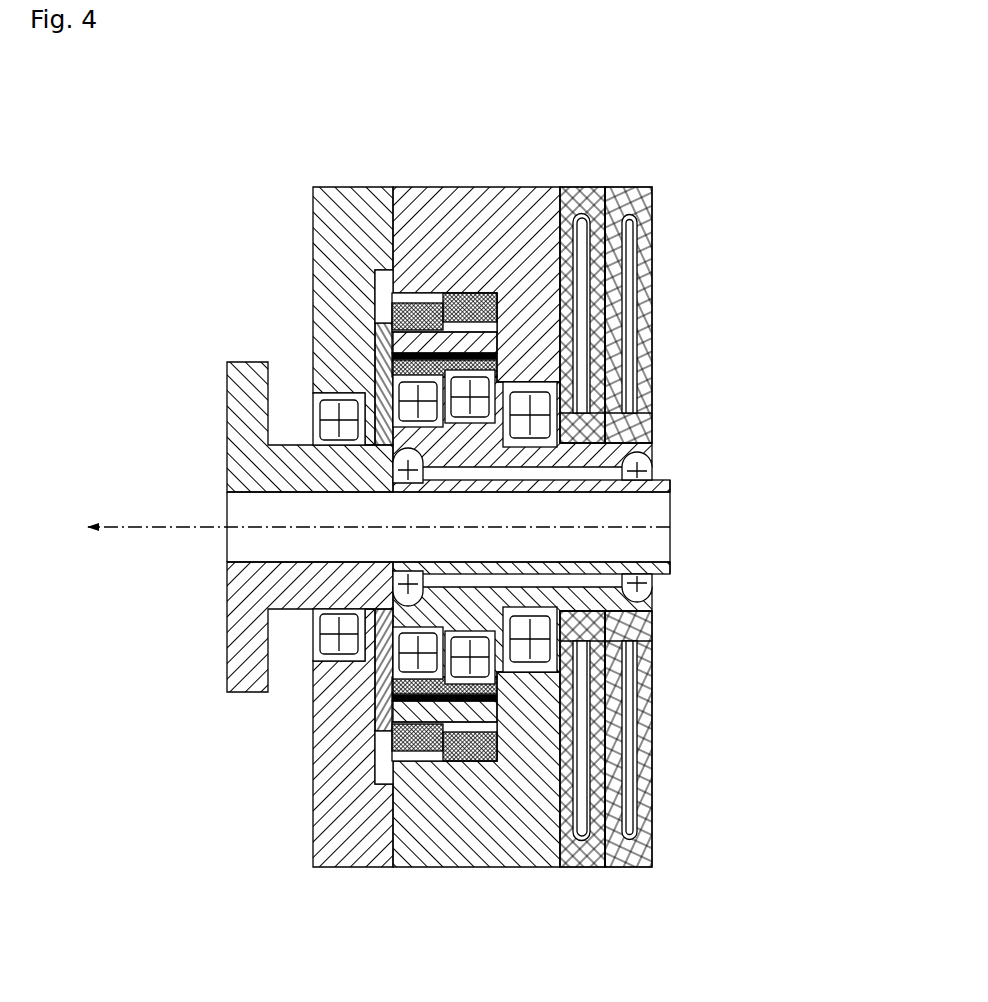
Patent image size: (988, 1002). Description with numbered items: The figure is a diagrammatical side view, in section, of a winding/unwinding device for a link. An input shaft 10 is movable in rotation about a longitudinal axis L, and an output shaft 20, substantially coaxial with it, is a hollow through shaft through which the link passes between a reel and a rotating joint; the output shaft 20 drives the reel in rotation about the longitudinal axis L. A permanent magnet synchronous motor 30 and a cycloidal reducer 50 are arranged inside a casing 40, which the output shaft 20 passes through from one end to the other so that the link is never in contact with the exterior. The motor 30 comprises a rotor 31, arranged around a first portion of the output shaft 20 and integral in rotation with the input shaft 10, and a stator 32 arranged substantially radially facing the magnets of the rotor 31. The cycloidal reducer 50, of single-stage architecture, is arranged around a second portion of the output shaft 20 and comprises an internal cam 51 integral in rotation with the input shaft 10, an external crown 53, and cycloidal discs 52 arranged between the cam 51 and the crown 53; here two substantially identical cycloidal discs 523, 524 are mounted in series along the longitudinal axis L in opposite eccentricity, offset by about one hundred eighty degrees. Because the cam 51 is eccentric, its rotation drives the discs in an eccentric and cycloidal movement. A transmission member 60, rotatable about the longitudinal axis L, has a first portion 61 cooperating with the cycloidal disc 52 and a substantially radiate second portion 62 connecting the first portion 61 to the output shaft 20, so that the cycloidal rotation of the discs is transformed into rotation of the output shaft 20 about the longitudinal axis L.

The input shaft 10 is at (598, 452).
The output shaft 20 is at (268, 468).
The permanent magnet synchronous motor 30 is at (600, 185).
The rotor 31 is at (630, 250).
The stator 32 is at (608, 338).
The casing 40 is at (328, 273).
The cycloidal reducer 50 is at (447, 185).
The internal cam 51 is at (316, 670).
The cycloidal disc 52 is at (408, 312).
The external crown 53 is at (315, 867).
The first cycloidal disc 523 is at (605, 742).
The second cycloidal disc 524 is at (375, 762).
The transmission member 60 is at (402, 713).
The first portion 61 is at (373, 332).
The second portion 62 is at (373, 380).
The longitudinal axis L is at (379, 548).